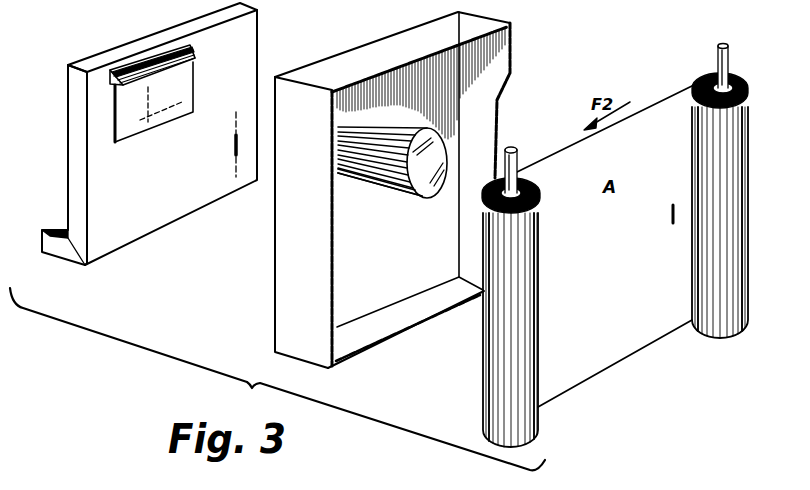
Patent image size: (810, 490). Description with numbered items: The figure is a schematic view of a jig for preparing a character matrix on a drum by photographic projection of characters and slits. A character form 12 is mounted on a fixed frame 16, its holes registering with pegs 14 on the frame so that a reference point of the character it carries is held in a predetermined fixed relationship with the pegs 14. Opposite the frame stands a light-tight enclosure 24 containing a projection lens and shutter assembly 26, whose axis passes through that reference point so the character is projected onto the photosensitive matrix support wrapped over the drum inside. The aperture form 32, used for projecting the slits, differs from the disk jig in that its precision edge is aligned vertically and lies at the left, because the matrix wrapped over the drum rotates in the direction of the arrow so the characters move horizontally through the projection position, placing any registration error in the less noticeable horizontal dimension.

The character form 12 is at (131, 134).
The pegs 14 is at (192, 47).
The fixed frame 16 is at (148, 38).
The light-tight enclosure 24 is at (274, 273).
The projection lens and shutter assembly 26 is at (403, 197).
The aperture form 32 is at (234, 147).